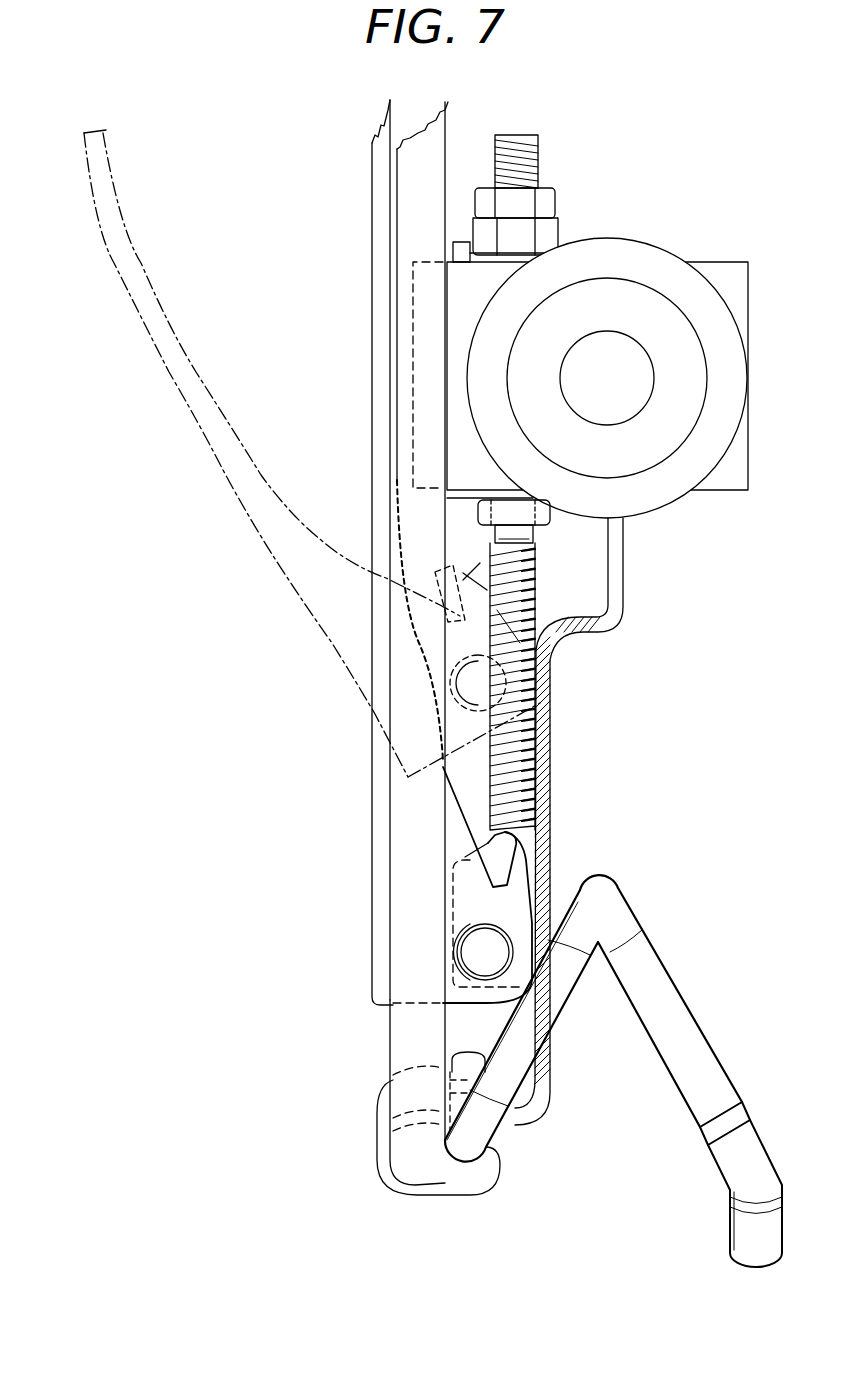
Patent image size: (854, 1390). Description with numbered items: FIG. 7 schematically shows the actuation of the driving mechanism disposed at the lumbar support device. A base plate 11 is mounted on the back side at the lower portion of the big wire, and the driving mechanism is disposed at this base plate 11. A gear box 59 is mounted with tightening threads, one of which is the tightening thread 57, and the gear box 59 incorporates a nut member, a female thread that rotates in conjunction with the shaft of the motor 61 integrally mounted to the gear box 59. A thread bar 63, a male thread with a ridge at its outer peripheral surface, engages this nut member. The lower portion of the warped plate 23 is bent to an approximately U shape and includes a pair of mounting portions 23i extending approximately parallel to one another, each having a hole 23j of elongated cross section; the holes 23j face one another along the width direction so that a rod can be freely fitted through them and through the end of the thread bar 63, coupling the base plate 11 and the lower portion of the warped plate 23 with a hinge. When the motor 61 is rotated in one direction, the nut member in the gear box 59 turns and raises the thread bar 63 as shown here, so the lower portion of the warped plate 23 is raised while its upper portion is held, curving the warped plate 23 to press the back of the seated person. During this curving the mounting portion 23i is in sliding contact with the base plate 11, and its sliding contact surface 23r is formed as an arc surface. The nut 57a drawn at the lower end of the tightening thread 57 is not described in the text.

The base plate 11 is at (608, 607).
The warped plate 23 is at (383, 863).
The mounting portion 23i is at (508, 902).
The hole 23j is at (477, 923).
The sliding contact surface 23r is at (533, 978).
The tightening thread 57 is at (550, 237).
The nut 57a is at (550, 522).
The gear box 59 is at (720, 270).
The motor 61 is at (630, 297).
The thread bar 63 is at (533, 563).